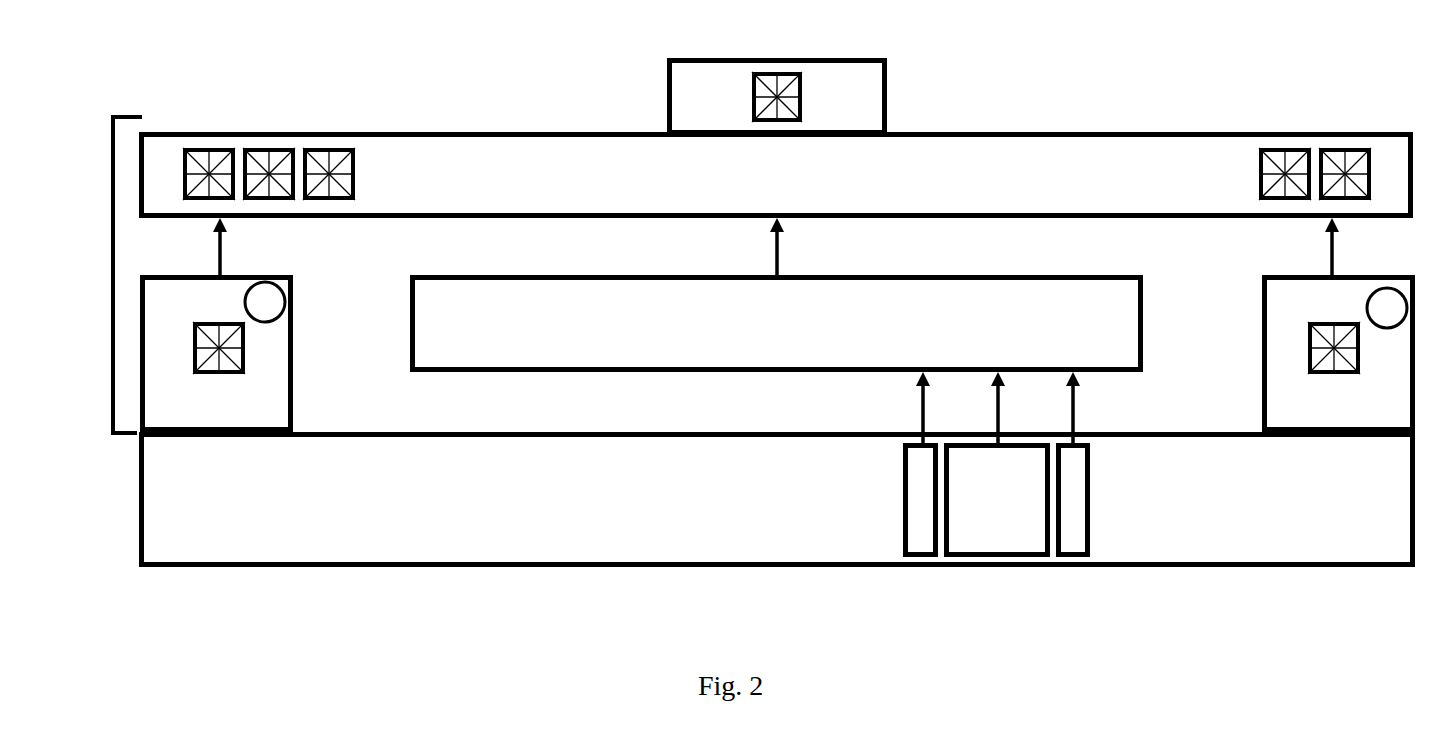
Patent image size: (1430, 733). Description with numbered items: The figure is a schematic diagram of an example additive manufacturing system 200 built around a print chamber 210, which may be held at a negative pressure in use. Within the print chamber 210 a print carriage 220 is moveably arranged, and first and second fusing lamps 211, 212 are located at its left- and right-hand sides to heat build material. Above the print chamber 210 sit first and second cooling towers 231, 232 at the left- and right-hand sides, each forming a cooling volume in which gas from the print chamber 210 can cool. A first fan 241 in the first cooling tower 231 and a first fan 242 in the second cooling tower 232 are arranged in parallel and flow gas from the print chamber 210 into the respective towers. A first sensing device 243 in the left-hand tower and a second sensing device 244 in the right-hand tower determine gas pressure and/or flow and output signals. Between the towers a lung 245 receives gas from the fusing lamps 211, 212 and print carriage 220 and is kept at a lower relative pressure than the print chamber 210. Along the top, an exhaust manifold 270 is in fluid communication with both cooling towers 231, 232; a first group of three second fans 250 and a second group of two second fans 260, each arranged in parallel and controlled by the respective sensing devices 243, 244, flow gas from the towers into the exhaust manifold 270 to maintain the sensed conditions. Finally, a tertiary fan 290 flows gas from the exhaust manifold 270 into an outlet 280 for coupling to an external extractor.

The additive manufacturing system 200 is at (442, 98).
The print chamber 210 is at (777, 500).
The first fusing lamp 211 is at (923, 535).
The second fusing lamp 212 is at (1072, 538).
The print carriage 220 is at (997, 500).
The first cooling tower 231 is at (217, 354).
The second cooling tower 232 is at (1339, 354).
The first fan 241 is at (213, 333).
The first fan 242 is at (1328, 330).
The first sensing device 243 is at (265, 302).
The second sensing device 244 is at (1385, 312).
The lung 245 is at (605, 275).
The first group of second fans 250 is at (335, 162).
The second group of second fans 260 is at (1360, 160).
The exhaust manifold 270 is at (776, 175).
The outlet 280 is at (777, 97).
The tertiary fan 290 is at (778, 97).